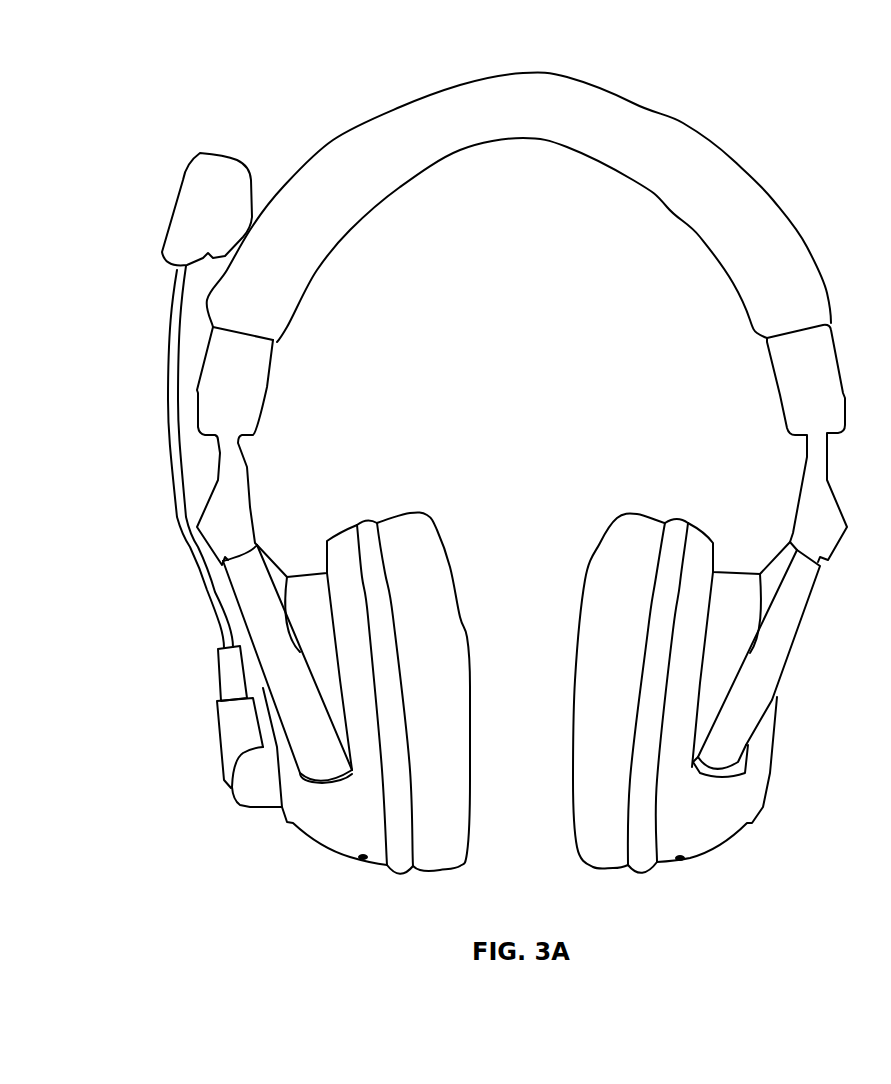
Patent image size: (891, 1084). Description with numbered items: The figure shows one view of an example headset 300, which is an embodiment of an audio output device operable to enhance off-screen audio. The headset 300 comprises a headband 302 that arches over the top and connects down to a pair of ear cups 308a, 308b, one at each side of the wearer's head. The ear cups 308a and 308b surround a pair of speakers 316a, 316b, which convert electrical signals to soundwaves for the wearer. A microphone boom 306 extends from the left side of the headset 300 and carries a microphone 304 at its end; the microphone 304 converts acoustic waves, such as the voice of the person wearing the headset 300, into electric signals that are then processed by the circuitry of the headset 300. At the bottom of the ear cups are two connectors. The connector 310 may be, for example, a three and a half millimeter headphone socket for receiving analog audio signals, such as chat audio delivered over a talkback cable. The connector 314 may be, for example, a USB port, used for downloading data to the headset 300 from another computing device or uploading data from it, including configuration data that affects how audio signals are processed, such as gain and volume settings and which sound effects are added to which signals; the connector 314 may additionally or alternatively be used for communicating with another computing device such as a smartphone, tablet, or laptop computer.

The headset 300 is at (214, 83).
The headband 302 is at (680, 131).
The microphone 304 is at (177, 207).
The microphone boom 306 is at (172, 428).
The ear cup 308a is at (437, 504).
The ear cup 308b is at (625, 506).
The connector 310 is at (362, 858).
The connector 314 is at (681, 860).
The speaker 316a is at (477, 650).
The speaker 316b is at (566, 614).